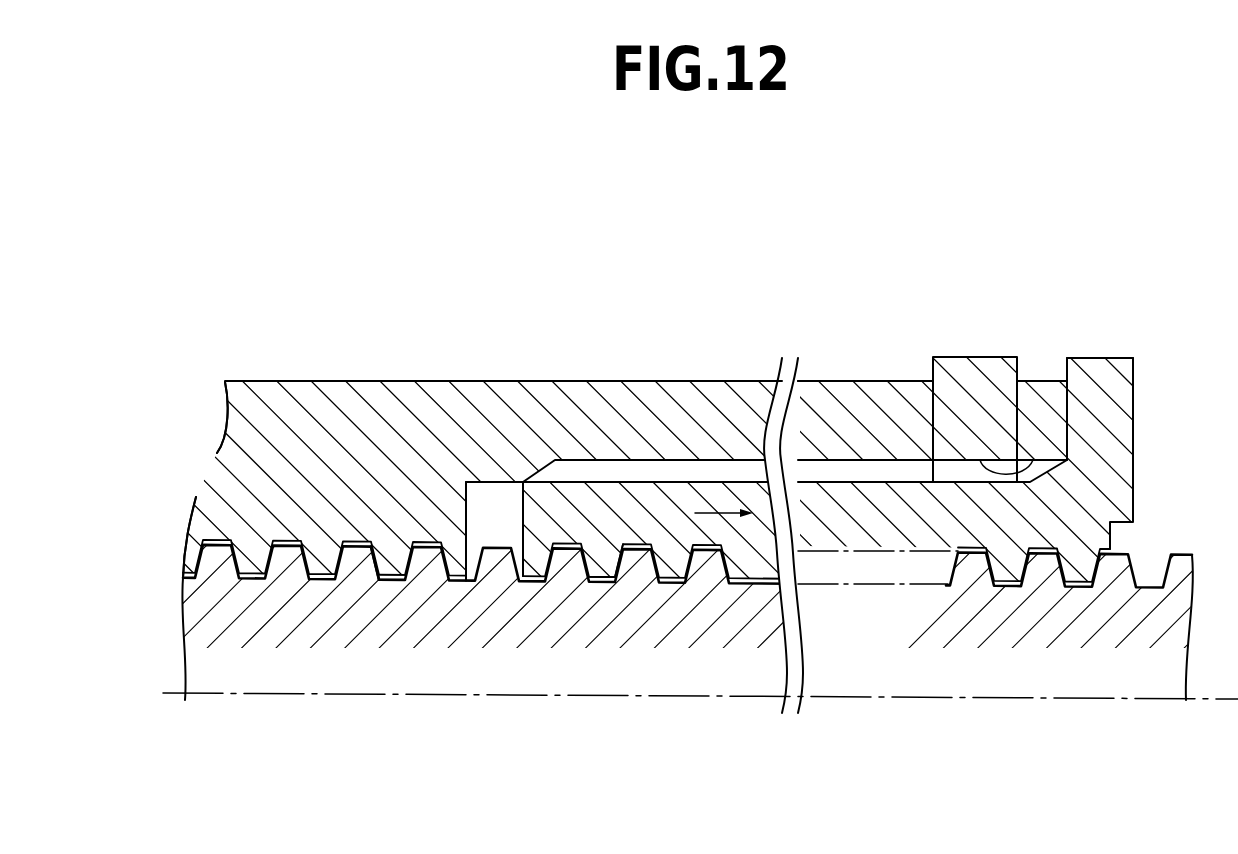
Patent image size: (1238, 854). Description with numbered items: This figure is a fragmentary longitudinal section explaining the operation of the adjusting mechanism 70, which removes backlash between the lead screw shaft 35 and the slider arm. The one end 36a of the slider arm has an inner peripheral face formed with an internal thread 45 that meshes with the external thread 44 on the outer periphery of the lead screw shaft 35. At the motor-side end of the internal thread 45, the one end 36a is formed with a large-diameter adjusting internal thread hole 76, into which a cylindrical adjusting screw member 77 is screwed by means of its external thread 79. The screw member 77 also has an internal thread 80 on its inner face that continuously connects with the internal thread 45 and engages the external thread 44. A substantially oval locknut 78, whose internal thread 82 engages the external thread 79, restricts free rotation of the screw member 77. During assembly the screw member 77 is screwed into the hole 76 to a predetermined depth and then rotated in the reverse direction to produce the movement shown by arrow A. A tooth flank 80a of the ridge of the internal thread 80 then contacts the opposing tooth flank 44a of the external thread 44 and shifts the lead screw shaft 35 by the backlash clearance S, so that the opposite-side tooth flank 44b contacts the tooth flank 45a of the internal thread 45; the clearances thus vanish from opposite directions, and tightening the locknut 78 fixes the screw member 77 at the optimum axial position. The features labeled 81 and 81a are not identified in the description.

The adjusting mechanism 70 is at (667, 350).
The one end of slider arm 36a is at (262, 415).
The external thread 44 is at (427, 557).
The backlash clearance S is at (400, 573).
The adjusting internal thread hole 76 is at (493, 486).
The opposite-side tooth flank of external thread 44b is at (466, 586).
The opposing tooth flank of external thread 44a is at (540, 558).
The external thread of adjusting screw member 79 is at (593, 473).
The adjusting screw member 77 is at (725, 442).
The locknut 78 is at (967, 370).
The internal thread of locknut 82 is at (1033, 460).
The flange 81 is at (1118, 444).
The flange top surface 81a is at (1115, 368).
The arrow A is at (709, 514).
The lead screw shaft 35 is at (247, 628).
The internal thread 45 is at (318, 580).
The tooth flank of internal thread 45a is at (370, 562).
The internal thread of adjusting screw member 80 is at (612, 560).
The tooth flank of internal thread ridge 80a is at (628, 557).